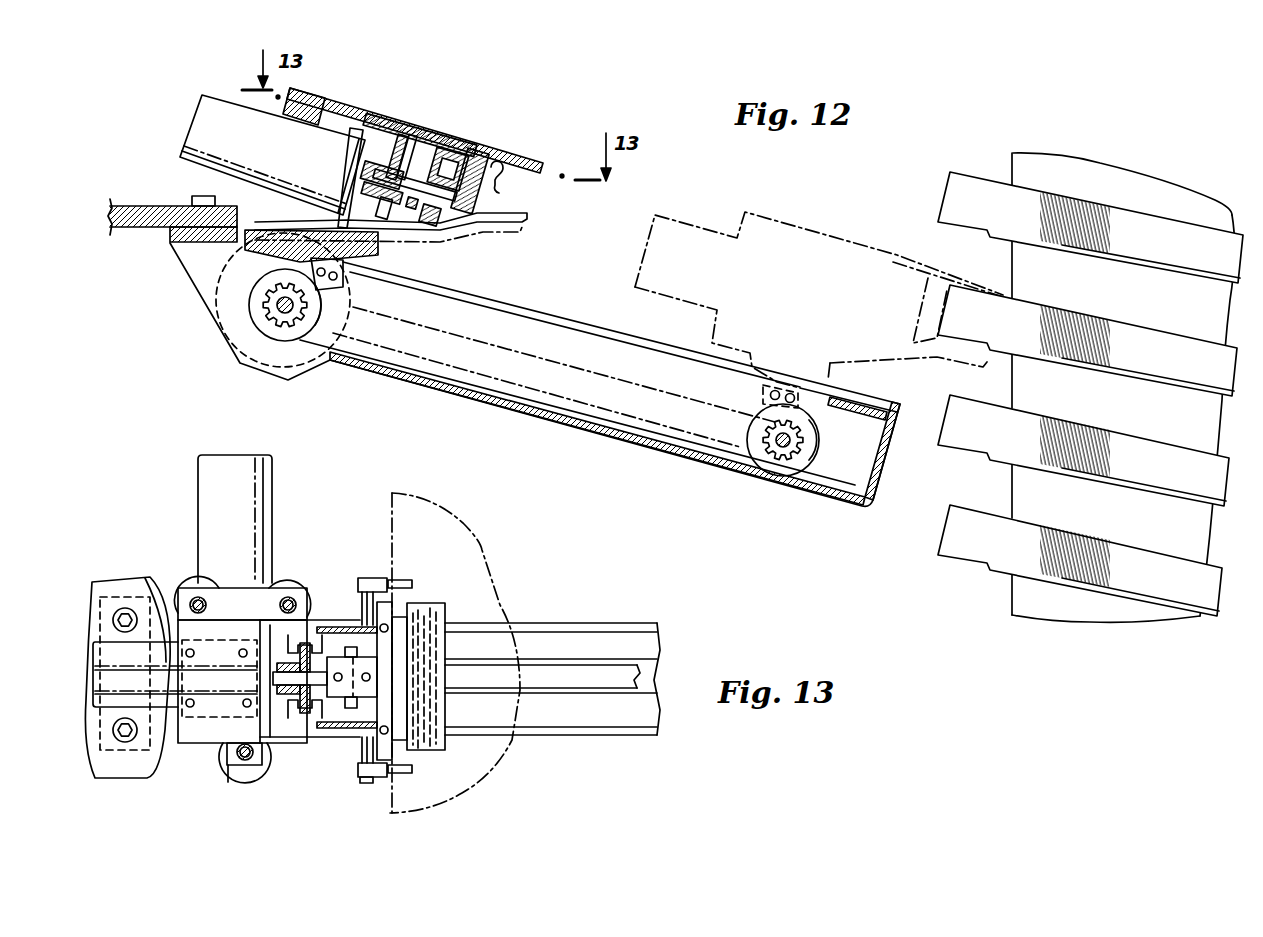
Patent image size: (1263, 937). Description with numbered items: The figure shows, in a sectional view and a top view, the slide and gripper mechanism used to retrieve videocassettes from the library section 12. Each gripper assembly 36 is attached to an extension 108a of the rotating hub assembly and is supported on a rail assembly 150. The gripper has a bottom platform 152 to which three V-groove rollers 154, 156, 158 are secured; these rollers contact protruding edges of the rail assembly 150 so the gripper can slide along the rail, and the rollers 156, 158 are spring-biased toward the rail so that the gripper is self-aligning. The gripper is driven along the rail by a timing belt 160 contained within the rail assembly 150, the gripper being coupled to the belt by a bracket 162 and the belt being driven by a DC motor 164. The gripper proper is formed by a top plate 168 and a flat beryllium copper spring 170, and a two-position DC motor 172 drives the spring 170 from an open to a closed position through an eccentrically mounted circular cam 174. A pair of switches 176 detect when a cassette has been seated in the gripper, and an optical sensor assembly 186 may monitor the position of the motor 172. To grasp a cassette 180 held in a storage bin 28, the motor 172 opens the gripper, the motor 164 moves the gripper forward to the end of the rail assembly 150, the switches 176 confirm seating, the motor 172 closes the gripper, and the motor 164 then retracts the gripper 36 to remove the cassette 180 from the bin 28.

In FIG. 12, the library section 12 is at (1012, 158).
In FIG. 12, the storage bin 28 is at (1072, 378).
In FIG. 12, the gripper assembly 36 is at (373, 96).
In FIG. 12, the extension 108a is at (157, 206).
In FIG. 13, the extension 108a is at (157, 773).
In FIG. 12, the rail assembly 150 is at (685, 452).
In FIG. 13, the bottom platform 152 is at (273, 762).
In FIG. 13, the V-groove roller 154 is at (222, 782).
In FIG. 13, the V-groove roller 156 is at (188, 575).
In FIG. 13, the V-groove roller 158 is at (290, 582).
In FIG. 12, the timing belt 160 is at (473, 384).
In FIG. 12, the bracket 162 is at (340, 282).
In FIG. 12, the DC motor 164 is at (222, 293).
In FIG. 13, the DC motor 164 is at (197, 483).
In FIG. 12, the top plate 168 is at (487, 160).
In FIG. 12, the flat beryllium copper spring 170 is at (447, 232).
In FIG. 13, the flat beryllium copper spring 170 is at (435, 605).
In FIG. 12, the two-position DC motor 172 is at (207, 94).
In FIG. 13, the two-position DC motor 172 is at (88, 645).
In FIG. 12, the eccentrically mounted circular cam 174 is at (448, 150).
In FIG. 12, the switch 176 is at (500, 188).
In FIG. 13, the switch 176 is at (382, 572).
In FIG. 12, the cassette 180 is at (1050, 307).
In FIG. 12, the optical sensor assembly 186 is at (405, 140).
In FIG. 13, the optical sensor assembly 186 is at (305, 708).